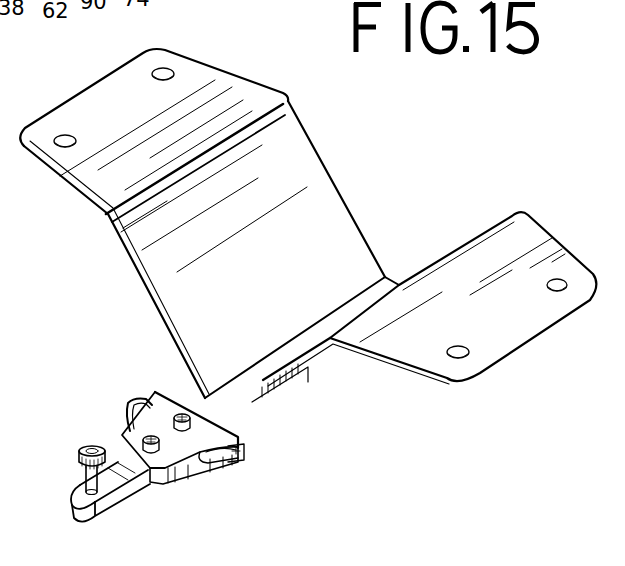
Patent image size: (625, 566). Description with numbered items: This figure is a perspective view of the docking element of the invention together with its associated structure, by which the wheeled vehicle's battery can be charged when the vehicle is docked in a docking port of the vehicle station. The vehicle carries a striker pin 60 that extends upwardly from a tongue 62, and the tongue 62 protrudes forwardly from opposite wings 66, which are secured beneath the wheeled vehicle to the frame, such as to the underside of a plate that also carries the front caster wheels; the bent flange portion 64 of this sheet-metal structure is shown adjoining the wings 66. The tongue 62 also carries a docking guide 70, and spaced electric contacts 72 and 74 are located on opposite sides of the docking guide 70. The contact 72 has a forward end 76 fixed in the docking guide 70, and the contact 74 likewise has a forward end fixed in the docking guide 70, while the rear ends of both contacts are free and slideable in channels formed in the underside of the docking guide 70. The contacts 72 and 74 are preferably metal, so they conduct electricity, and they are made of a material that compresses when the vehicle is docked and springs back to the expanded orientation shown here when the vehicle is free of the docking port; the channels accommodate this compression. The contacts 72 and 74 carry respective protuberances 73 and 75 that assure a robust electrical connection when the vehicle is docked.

The striker pin 60 is at (85, 480).
The tongue 62 is at (122, 490).
The mounting flange 64 is at (437, 267).
The wings 66 is at (304, 177).
The docking guide 70 is at (213, 441).
The electric contact 72 is at (197, 473).
The protuberance 73 is at (230, 472).
The electric contact 74 is at (124, 427).
The protuberance 75 is at (147, 404).
The forward end 76 is at (167, 480).